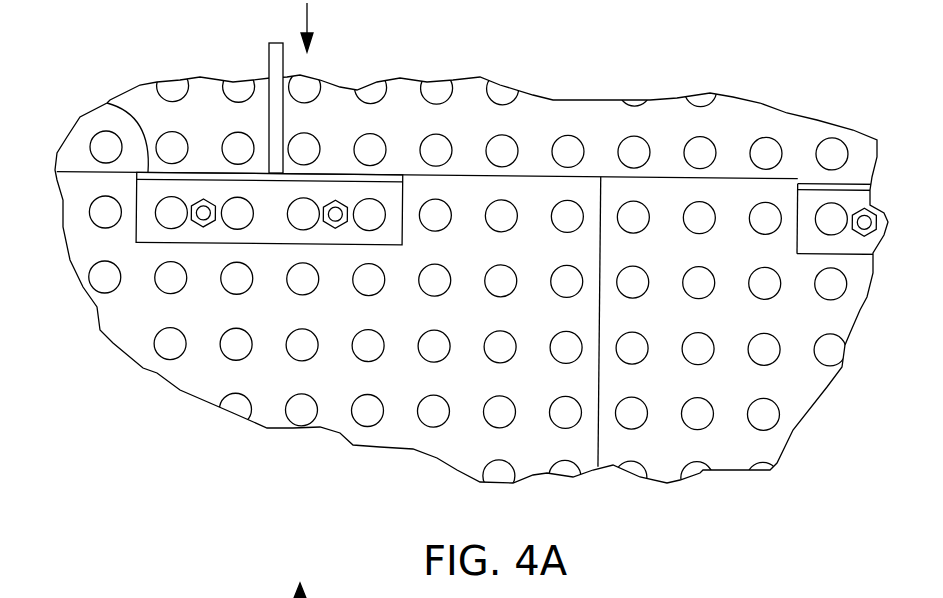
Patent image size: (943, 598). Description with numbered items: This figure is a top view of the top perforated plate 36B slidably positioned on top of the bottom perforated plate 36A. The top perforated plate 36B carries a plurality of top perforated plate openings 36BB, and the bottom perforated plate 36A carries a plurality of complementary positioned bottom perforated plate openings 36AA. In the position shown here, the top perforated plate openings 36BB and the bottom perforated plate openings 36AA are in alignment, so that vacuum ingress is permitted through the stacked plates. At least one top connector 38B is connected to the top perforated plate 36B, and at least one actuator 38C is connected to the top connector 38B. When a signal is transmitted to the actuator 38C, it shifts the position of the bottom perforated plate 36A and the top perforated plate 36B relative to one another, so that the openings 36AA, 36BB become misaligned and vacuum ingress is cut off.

The bottom perforated plate 36A is at (672, 132).
The bottom perforated plate openings 36AA is at (703, 150).
The top perforated plate 36B is at (533, 193).
The top perforated plate openings 36BB is at (513, 203).
The top connector 38B is at (107, 103).
The actuator 38C is at (278, 90).